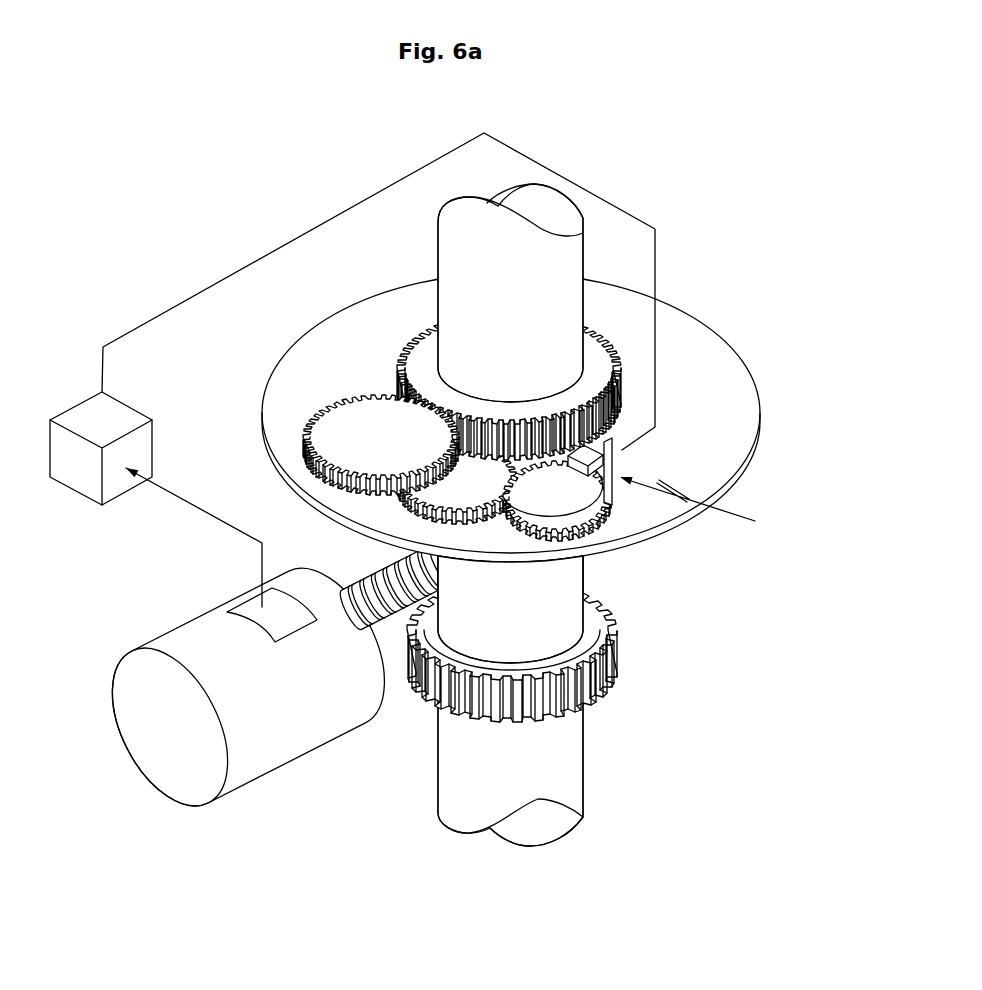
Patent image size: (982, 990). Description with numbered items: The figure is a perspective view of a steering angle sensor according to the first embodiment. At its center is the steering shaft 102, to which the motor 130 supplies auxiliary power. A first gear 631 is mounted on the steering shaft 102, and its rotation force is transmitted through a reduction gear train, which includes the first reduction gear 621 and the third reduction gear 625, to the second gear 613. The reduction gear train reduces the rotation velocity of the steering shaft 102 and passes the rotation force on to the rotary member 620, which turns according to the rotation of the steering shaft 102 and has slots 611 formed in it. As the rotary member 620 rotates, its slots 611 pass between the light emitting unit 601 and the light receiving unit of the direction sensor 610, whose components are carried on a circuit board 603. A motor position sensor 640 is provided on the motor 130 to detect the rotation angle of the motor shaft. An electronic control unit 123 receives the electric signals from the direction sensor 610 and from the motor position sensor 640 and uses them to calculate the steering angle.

The steering shaft 102 is at (460, 243).
The electronic control unit 123 is at (104, 415).
The motor 130 is at (295, 738).
The light emitting unit 601 is at (612, 467).
The circuit board 603 is at (607, 455).
The direction sensor 610 is at (708, 506).
The slots 611 is at (613, 495).
The second gear 613 is at (584, 532).
The rotary member 620 is at (590, 512).
The first reduction gear 621 is at (322, 435).
The third reduction gear 625 is at (408, 500).
The first gear 631 is at (417, 330).
The motor position sensor 640 is at (253, 607).